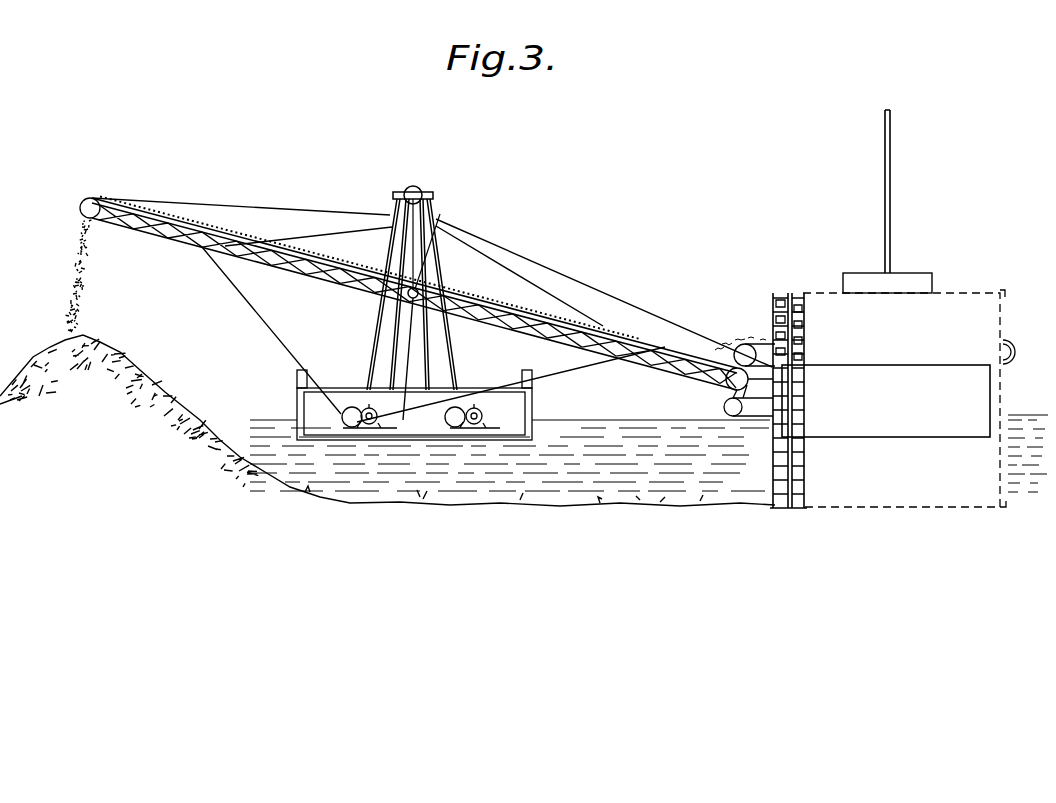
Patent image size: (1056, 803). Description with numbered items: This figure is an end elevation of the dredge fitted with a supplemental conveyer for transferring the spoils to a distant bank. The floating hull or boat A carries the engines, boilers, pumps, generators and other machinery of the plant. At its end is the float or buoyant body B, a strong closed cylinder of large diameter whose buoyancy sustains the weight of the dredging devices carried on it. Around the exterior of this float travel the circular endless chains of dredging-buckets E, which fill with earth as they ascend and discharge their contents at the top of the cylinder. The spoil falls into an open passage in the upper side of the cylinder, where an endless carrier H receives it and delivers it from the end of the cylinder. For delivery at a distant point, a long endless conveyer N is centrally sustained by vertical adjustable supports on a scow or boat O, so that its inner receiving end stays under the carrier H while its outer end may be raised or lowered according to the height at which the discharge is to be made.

The long endless conveyer N is at (575, 326).
The scow or boat O is at (533, 405).
The endless carrier H is at (750, 342).
The dredging-buckets E is at (797, 293).
The float or buoyant body B is at (764, 466).
The floating hull or boat A is at (892, 409).